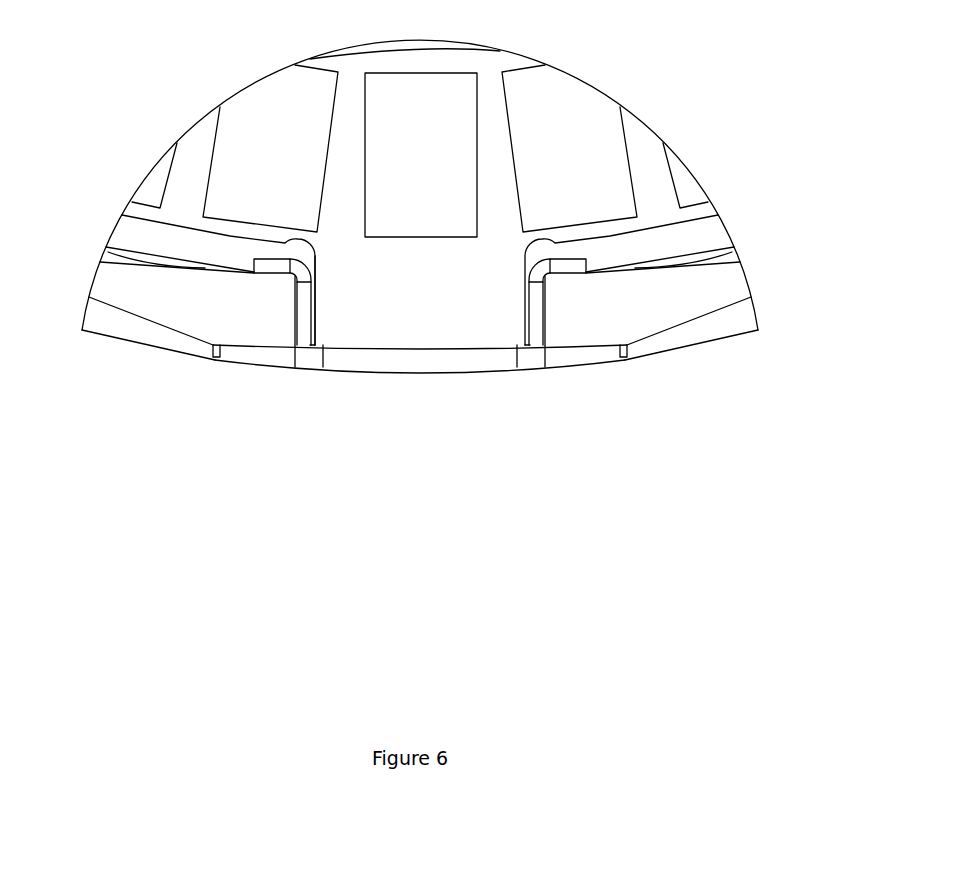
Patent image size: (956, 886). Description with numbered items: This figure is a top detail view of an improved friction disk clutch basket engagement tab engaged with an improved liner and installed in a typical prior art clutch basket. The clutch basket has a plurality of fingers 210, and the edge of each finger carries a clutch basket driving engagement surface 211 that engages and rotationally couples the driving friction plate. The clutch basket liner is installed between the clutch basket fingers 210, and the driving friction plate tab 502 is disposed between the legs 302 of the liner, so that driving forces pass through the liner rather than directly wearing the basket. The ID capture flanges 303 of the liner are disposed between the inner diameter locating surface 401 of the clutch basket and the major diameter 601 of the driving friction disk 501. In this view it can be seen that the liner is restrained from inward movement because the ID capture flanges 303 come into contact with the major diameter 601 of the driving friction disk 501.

The fingers 210 is at (188, 298).
The clutch basket driving engagement surface 211 is at (303, 306).
The legs 302 is at (292, 314).
The ID capture flanges 303 is at (269, 267).
The inner diameter locating surface 401 is at (602, 272).
The driving friction disk 501 is at (490, 158).
The driving friction plate tab 502 is at (425, 318).
The major diameter 601 is at (588, 243).